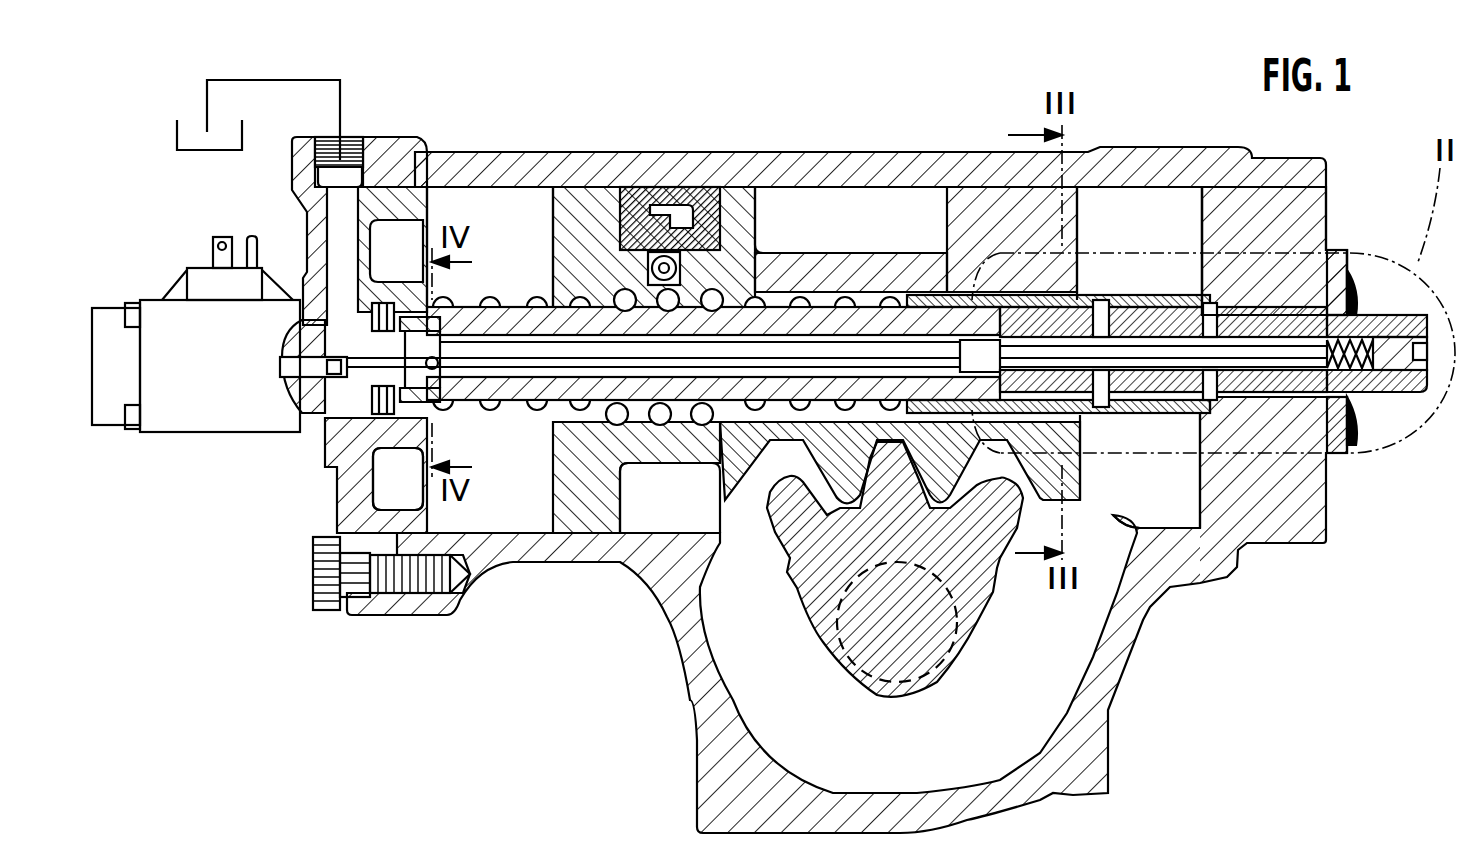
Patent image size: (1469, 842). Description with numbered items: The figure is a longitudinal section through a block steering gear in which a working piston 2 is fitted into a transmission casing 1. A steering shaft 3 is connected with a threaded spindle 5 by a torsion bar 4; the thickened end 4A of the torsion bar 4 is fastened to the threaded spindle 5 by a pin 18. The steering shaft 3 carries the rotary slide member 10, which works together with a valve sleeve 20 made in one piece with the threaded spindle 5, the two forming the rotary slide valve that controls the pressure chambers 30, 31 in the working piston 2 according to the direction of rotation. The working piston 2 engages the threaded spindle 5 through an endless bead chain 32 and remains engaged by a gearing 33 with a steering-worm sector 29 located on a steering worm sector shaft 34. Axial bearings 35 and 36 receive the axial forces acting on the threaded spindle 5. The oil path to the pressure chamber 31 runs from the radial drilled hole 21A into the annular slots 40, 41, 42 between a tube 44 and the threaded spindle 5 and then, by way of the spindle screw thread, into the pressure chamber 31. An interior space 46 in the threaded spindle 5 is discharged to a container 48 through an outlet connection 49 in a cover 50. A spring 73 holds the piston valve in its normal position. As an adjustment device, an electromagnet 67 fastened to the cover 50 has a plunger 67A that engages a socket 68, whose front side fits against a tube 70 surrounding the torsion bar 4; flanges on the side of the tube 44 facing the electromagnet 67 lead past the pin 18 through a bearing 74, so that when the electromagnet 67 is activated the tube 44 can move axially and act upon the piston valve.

The transmission casing 1 is at (722, 170).
The working piston 2 is at (980, 213).
The steering shaft 3 is at (1445, 300).
The torsion bar 4 is at (852, 353).
The thickened end of the torsion bar 4A is at (480, 377).
The threaded spindle 5 is at (775, 290).
The rotary slide member 10 is at (1327, 257).
The pin 18 is at (433, 358).
The valve sleeve 20 is at (1233, 297).
The radial drilled hole 21A is at (1180, 420).
The steering-worm sector 29 is at (813, 613).
The pressure chamber 30 is at (1130, 215).
The pressure chamber 31 is at (527, 208).
The endless bead chain 32 is at (660, 230).
The gearing 33 is at (735, 475).
The steering worm sector shaft 34 is at (963, 617).
The axial bearing 35 is at (1333, 455).
The axial bearing 36 is at (390, 420).
The annular slot 40 is at (1162, 297).
The annular slot 41 is at (1072, 447).
The annular slot 42 is at (953, 292).
The tube 44 is at (1113, 300).
The interior space 46 is at (567, 387).
The container 48 is at (177, 140).
The outlet connection 49 is at (343, 160).
The cover 50 is at (387, 197).
The electromagnet 67 is at (200, 368).
The plunger 67A is at (290, 367).
The socket 68 is at (323, 390).
The tube 70 is at (645, 380).
The spring 73 is at (1375, 322).
The bearing 74 is at (455, 418).